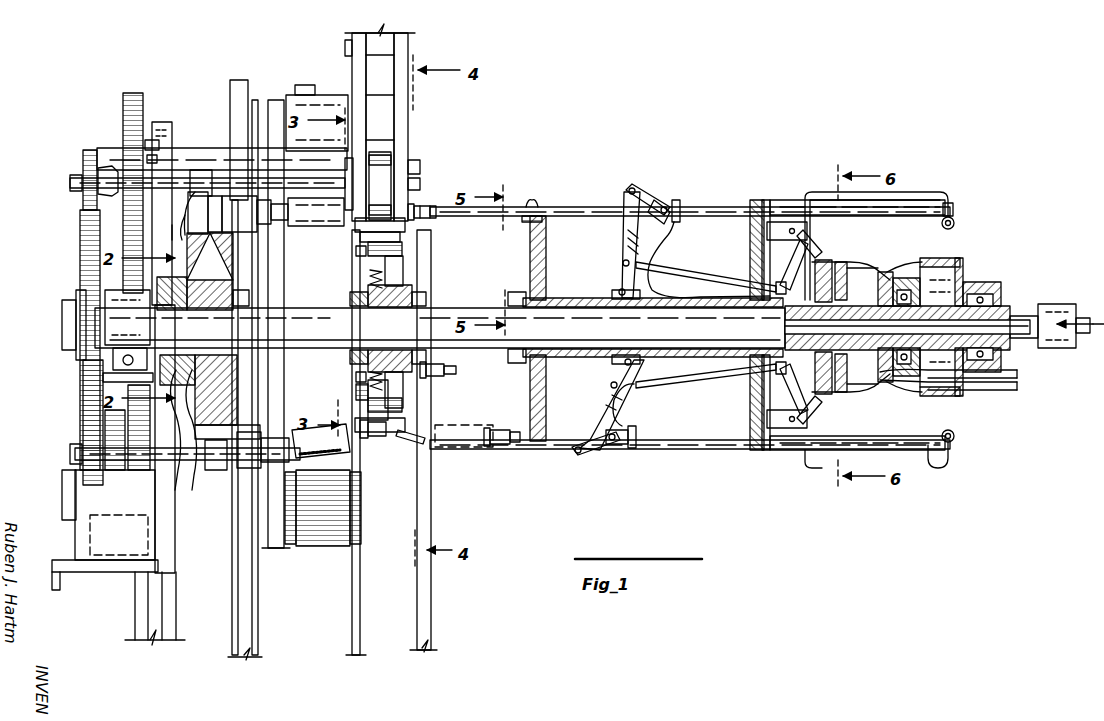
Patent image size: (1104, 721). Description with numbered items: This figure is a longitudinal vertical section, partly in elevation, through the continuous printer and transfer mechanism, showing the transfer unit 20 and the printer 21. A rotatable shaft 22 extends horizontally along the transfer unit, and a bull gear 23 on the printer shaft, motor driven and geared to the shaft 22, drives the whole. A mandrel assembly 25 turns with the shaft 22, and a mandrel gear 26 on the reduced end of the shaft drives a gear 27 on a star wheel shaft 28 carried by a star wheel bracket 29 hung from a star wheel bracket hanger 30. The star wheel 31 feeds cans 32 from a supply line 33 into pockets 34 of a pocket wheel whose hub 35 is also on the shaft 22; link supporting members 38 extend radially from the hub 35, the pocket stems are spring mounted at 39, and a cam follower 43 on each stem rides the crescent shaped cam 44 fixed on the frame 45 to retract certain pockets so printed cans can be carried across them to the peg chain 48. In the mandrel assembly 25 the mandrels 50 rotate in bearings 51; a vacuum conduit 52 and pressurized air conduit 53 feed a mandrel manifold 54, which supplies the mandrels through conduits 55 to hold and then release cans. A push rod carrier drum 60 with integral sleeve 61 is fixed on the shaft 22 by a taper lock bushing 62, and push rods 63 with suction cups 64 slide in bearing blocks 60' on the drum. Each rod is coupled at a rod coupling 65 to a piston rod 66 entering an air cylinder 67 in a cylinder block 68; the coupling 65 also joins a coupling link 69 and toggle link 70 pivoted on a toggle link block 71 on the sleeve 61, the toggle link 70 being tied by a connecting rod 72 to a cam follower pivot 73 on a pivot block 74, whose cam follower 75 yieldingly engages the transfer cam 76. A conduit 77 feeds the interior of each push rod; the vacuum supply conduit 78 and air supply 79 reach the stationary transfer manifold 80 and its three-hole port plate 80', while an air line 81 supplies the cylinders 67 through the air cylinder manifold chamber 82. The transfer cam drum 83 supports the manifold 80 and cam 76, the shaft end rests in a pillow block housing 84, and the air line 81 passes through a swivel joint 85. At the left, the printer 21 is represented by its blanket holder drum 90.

The transfer unit 20 is at (662, 455).
The printer 21 is at (326, 556).
The rotatable shaft 22 is at (398, 335).
The bull gear 23 is at (122, 104).
The mandrel assembly 25 is at (212, 208).
The mandrel gear 26 is at (80, 238).
The gear 27 is at (83, 158).
The star wheel shaft 28 is at (190, 178).
The star wheel bracket 29 is at (110, 150).
The star wheel bracket hanger 30 is at (150, 140).
The star wheel 31 is at (380, 185).
The cans 32 is at (400, 58).
The supply line 33 is at (352, 42).
The pockets 34 is at (404, 225).
The hub 35 is at (410, 290).
The link supporting members 38 is at (402, 265).
The spring mounting 39 is at (370, 272).
The cam follower 43 is at (356, 252).
The crescent shaped cam 44 is at (356, 392).
The frame 45 is at (360, 612).
The chain 48 is at (414, 434).
The mandrels 50 is at (330, 220).
The bearings 51 is at (250, 221).
The vacuum conduit 52 is at (185, 446).
The pressurized air conduit 53 is at (205, 446).
The mandrel manifold 54 is at (175, 370).
The conduits 55 is at (226, 248).
The push rod carrier drum 60 is at (627, 325).
The bearing blocks 60' is at (534, 192).
The sleeve 61 is at (565, 302).
The taper lock bushing 62 is at (514, 296).
The push rods 63 is at (578, 206).
The suction cups 64 is at (432, 205).
The rod coupling 65 is at (674, 206).
The piston rod 66 is at (712, 206).
The air cylinder 67 is at (798, 200).
The cylinder block 68 is at (757, 198).
The coupling link 69 is at (640, 197).
The toggle link 70 is at (624, 242).
The toggle link block 71 is at (612, 292).
The connecting rod 72 is at (700, 278).
The cam follower pivot 73 is at (822, 240).
The pivot block 74 is at (782, 222).
The cam follower 75 is at (826, 250).
The transfer cam 76 is at (830, 262).
The conduit 77 is at (668, 238).
The vacuum supply conduit 78 is at (1005, 388).
The air supply 79 is at (1018, 370).
The transfer manifold 80 is at (901, 344).
The port plate 80' is at (854, 338).
The air line 81 is at (1080, 320).
The air cylinder manifold chamber 82 is at (956, 222).
The transfer cam drum 83 is at (962, 264).
The pillow block housing 84 is at (1001, 288).
The swivel joint 85 is at (1053, 318).
The blanket holder drum 90 is at (286, 548).